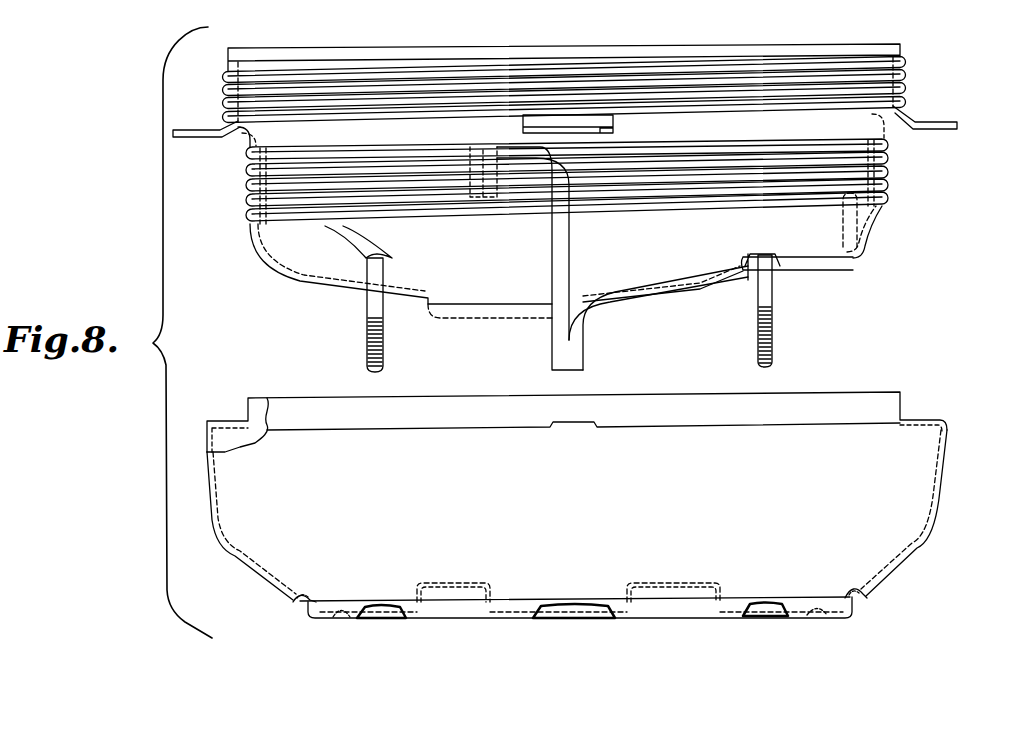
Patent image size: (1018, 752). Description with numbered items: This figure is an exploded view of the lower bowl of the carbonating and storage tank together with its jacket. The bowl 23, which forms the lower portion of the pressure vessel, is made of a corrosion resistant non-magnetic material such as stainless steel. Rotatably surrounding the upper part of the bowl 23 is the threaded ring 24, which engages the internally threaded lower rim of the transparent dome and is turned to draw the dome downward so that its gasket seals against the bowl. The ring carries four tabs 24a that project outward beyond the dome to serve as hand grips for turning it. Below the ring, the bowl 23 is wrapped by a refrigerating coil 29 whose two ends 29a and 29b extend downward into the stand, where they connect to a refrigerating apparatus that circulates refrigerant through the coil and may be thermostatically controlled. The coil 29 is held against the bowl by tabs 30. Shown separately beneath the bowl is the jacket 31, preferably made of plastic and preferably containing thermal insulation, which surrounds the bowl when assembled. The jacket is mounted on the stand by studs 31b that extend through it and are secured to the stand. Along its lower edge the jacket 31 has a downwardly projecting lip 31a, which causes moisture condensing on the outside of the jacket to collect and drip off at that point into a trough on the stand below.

The bowl 23 is at (307, 258).
The threaded ring 24 is at (908, 74).
The tabs 24a is at (200, 138).
The refrigerating coil 29 is at (884, 173).
The coil end 29a is at (563, 353).
The coil end 29b is at (581, 350).
The tabs 30 is at (358, 244).
The jacket 31 is at (263, 535).
The downwardly projecting lip 31a is at (300, 602).
The studs 31b is at (384, 341).